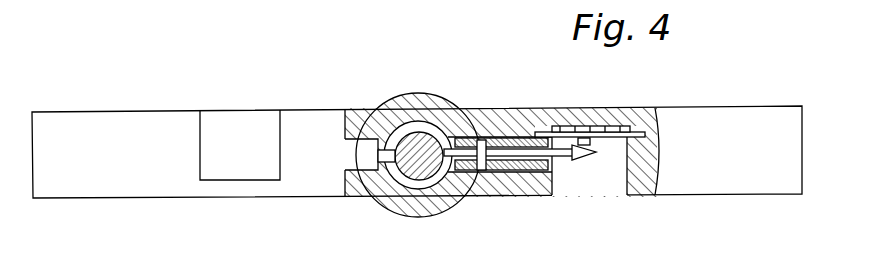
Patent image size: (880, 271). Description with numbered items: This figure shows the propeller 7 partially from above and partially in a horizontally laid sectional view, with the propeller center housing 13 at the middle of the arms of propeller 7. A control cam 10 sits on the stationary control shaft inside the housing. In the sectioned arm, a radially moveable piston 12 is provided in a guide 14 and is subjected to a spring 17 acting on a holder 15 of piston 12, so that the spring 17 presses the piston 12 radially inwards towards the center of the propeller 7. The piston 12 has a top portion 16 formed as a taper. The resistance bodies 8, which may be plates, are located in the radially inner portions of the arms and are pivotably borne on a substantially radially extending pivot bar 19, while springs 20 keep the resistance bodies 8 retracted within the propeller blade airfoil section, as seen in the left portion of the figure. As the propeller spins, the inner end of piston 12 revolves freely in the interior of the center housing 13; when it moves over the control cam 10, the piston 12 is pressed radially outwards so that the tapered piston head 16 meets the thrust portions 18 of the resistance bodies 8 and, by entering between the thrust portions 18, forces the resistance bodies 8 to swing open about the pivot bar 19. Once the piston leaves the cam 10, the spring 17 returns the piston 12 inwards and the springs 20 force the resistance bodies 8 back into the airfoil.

The propeller 7 is at (137, 156).
The resistance bodies 8 is at (216, 148).
The control cam 10 is at (447, 140).
The piston 12 is at (521, 150).
The propeller center housing 13 is at (395, 99).
The guide 14 is at (503, 118).
The holder 15 is at (481, 170).
The top portion 16 is at (575, 161).
The spring 17 is at (503, 171).
The thrust portions 18 is at (585, 146).
The pivot bar 19 is at (637, 131).
The springs 20 is at (608, 126).